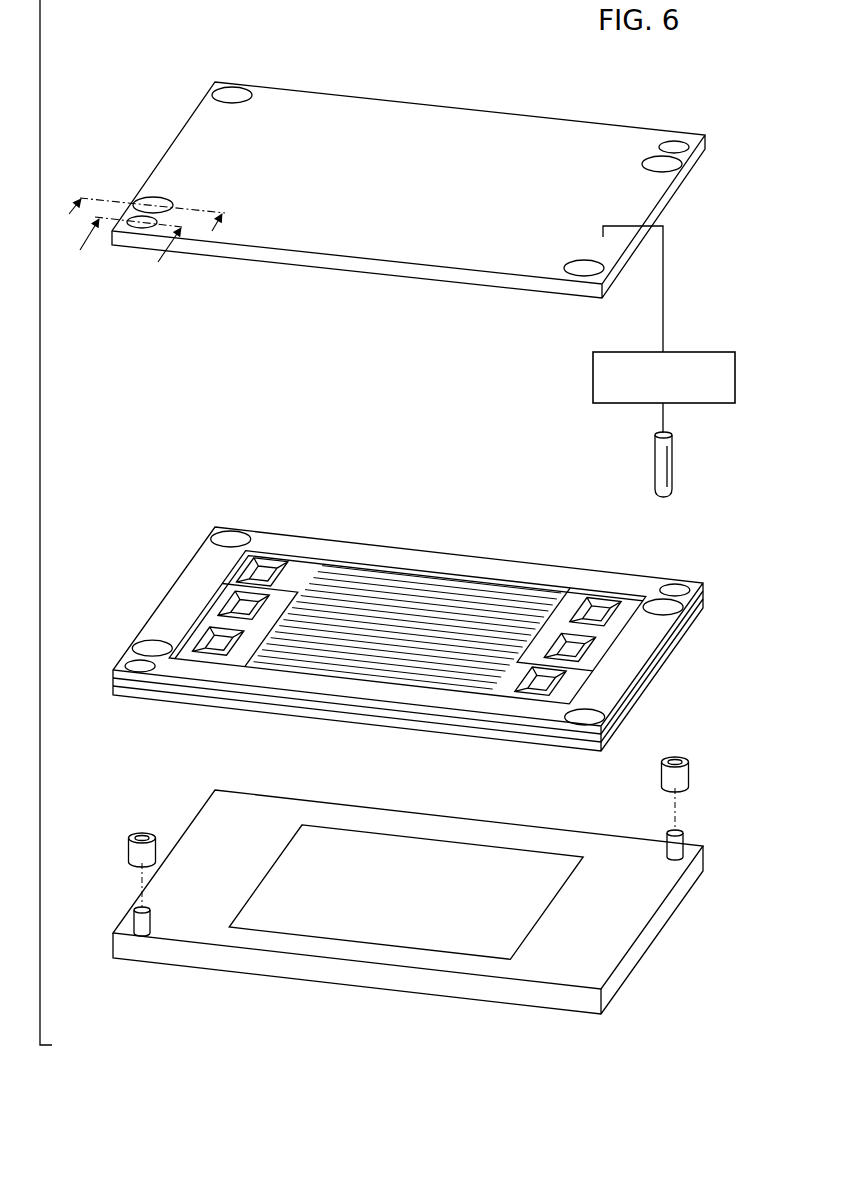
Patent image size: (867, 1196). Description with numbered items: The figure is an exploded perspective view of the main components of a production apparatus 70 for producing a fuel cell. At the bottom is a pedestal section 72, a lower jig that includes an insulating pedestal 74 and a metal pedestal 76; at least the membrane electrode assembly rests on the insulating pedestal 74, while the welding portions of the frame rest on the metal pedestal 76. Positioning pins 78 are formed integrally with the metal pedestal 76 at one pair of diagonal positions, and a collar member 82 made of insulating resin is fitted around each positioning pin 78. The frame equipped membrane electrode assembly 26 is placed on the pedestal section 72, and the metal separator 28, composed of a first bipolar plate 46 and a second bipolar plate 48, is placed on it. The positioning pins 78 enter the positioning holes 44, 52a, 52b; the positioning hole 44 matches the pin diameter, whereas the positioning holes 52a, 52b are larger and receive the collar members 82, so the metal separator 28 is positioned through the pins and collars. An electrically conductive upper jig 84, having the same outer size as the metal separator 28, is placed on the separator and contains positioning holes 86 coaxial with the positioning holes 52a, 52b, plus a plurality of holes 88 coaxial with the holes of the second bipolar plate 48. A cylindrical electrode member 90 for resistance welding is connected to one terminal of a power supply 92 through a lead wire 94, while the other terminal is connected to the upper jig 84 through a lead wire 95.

The production apparatus 70 is at (640, 80).
The upper jig 84 is at (530, 116).
The holes 88 is at (235, 90).
The positioning holes 86 is at (674, 142).
The lead wire 95 is at (666, 272).
The power supply 92 is at (693, 352).
The lead wire 94 is at (661, 424).
The electrode member 90 is at (670, 455).
The frame equipped membrane electrode assembly 26 is at (456, 736).
The metal separator 28 is at (408, 676).
The first bipolar plate 46 is at (326, 770).
The second bipolar plate 48 is at (343, 711).
The positioning hole 52b is at (408, 640).
The positioning hole 52a is at (407, 628).
The positioning hole 44 is at (676, 585).
The pedestal section 72 is at (419, 900).
The insulating pedestal 74 is at (532, 866).
The metal pedestal 76 is at (577, 840).
The positioning pins 78 is at (141, 936).
The collar member 82 is at (150, 836).